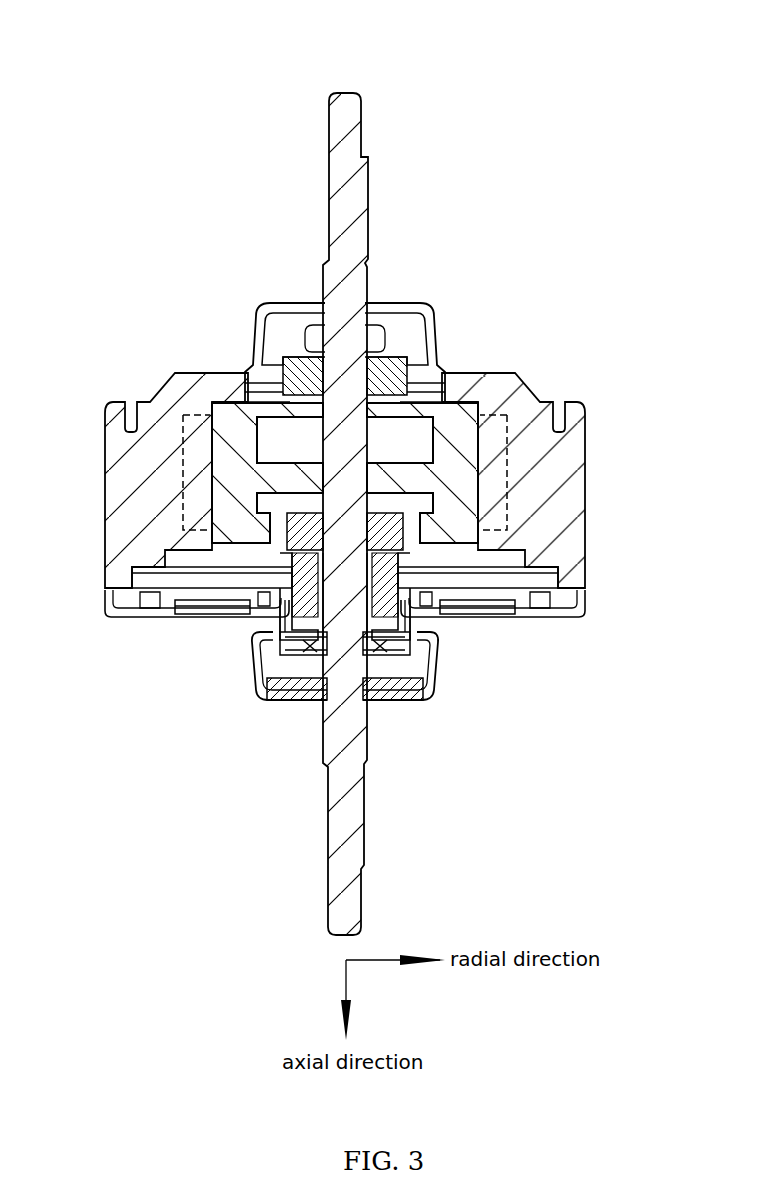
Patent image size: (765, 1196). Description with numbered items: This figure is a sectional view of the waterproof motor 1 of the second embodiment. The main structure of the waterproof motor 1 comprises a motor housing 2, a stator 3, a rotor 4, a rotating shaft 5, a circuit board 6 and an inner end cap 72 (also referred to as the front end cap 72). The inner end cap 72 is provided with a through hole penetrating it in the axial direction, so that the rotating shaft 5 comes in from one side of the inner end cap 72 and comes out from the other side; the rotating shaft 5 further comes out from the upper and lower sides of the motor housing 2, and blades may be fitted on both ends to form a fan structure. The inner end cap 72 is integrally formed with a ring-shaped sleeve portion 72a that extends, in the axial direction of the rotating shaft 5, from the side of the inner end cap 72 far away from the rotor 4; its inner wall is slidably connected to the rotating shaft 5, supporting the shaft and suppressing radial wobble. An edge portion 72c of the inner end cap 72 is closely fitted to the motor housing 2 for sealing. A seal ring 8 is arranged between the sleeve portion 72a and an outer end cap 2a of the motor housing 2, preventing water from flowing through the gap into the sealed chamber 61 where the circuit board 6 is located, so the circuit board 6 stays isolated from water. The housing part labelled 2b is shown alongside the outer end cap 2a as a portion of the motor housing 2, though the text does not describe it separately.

The waterproof motor 1 is at (370, 475).
The motor housing 2 is at (409, 656).
The outer end cap 2a is at (567, 554).
The second bracket portion (cover) 2b is at (562, 634).
The stator 3 is at (203, 483).
The rotor 4 is at (232, 468).
The rotating shaft 5 is at (352, 128).
The circuit board 6 is at (495, 617).
The seal ring 8 is at (296, 656).
The chamber 61 is at (188, 560).
The inner end cap 72 is at (480, 540).
The sleeve portion 72a is at (392, 617).
The edge portion 72c is at (412, 531).